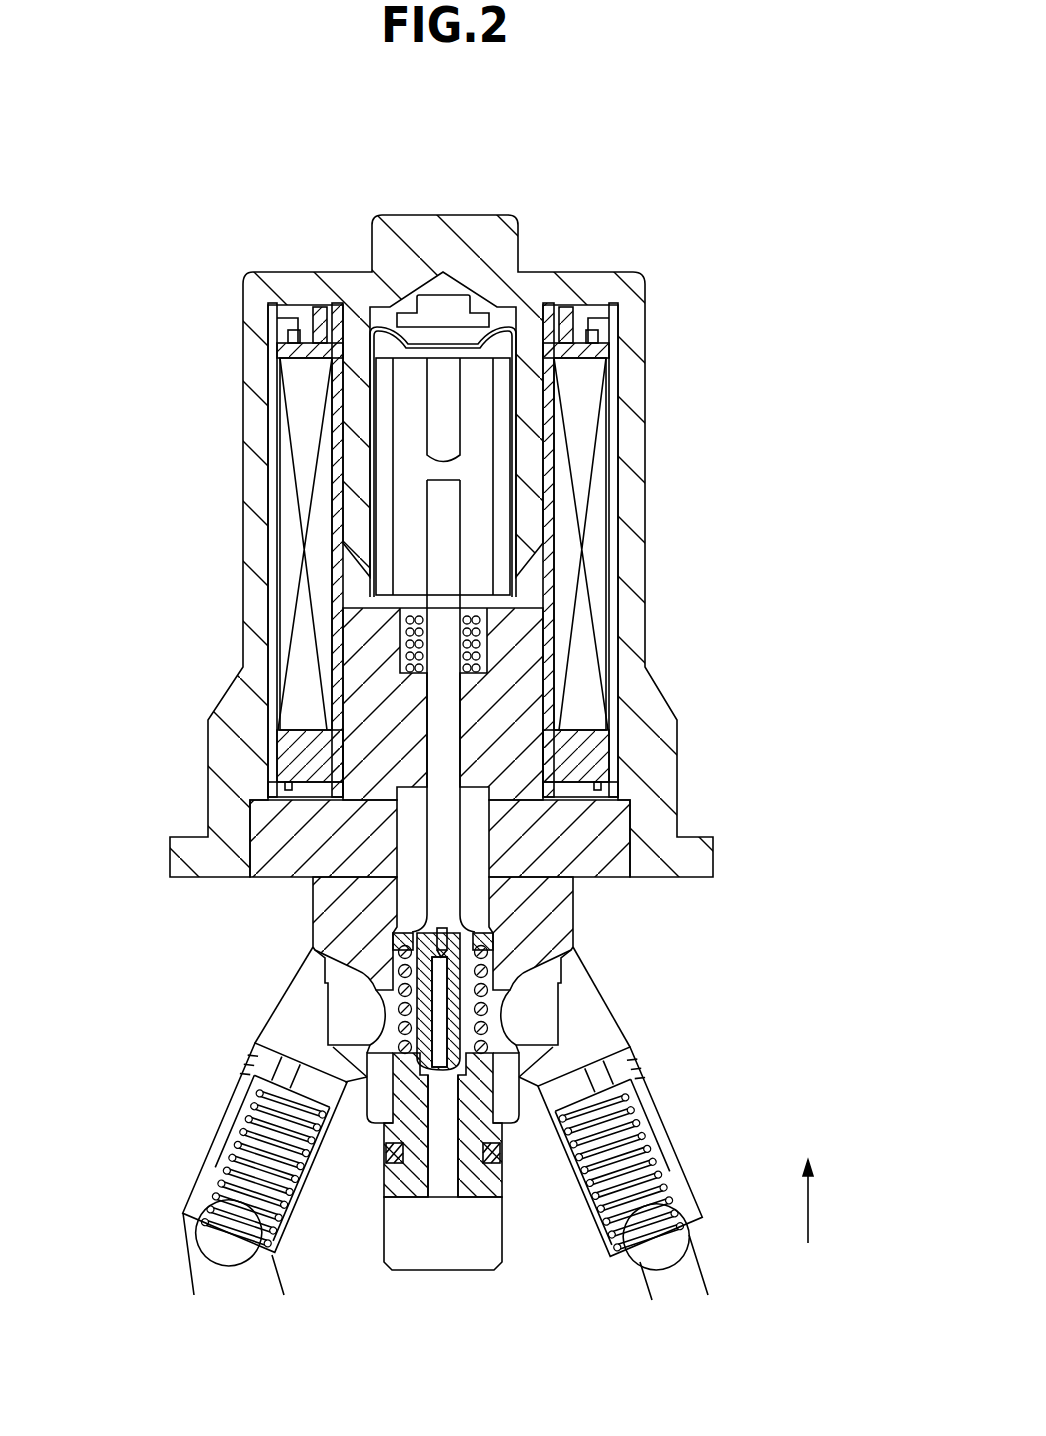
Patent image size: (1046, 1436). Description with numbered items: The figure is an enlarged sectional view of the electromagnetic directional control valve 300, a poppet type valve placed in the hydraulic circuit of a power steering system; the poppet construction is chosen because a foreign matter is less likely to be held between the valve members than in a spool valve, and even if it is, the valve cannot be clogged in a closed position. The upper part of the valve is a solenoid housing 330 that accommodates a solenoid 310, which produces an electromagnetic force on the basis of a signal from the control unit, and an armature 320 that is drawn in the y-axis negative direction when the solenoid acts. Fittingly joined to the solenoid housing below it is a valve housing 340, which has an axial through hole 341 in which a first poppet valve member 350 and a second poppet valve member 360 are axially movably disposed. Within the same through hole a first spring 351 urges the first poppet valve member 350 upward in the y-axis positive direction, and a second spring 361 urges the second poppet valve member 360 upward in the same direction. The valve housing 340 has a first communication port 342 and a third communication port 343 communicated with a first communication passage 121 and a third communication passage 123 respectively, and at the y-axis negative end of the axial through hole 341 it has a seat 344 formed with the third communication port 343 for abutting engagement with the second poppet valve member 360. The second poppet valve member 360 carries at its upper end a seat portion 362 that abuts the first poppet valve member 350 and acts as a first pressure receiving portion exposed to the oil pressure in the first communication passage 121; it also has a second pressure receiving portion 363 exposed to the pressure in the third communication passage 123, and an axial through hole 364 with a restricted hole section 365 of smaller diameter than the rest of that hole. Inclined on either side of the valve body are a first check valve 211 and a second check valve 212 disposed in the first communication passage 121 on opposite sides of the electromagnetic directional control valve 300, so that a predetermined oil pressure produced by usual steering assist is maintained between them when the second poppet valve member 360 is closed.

The electromagnetic directional control valve 300 is at (565, 210).
The solenoid 310 is at (583, 407).
The armature 320 is at (408, 382).
The solenoid housing 330 is at (462, 214).
The valve housing 340 is at (610, 863).
The axial through hole 341 is at (480, 850).
The first communication port 342 is at (507, 1013).
The third communication port 343 is at (440, 1177).
The seat 344 is at (473, 1177).
The first poppet valve member 350 is at (440, 712).
The first spring 351 is at (400, 643).
The second poppet valve member 360 is at (407, 963).
The second spring 361 is at (403, 1003).
The seat portion 362 is at (445, 935).
The second pressure receiving portion 363 is at (390, 1137).
The axial through hole 364 is at (440, 1028).
The restricted hole section 365 is at (453, 926).
The first check valve 211 is at (210, 1153).
The second check valve 212 is at (670, 1157).
The first communication passage 121 is at (200, 1268).
The third communication passage 123 is at (468, 1240).